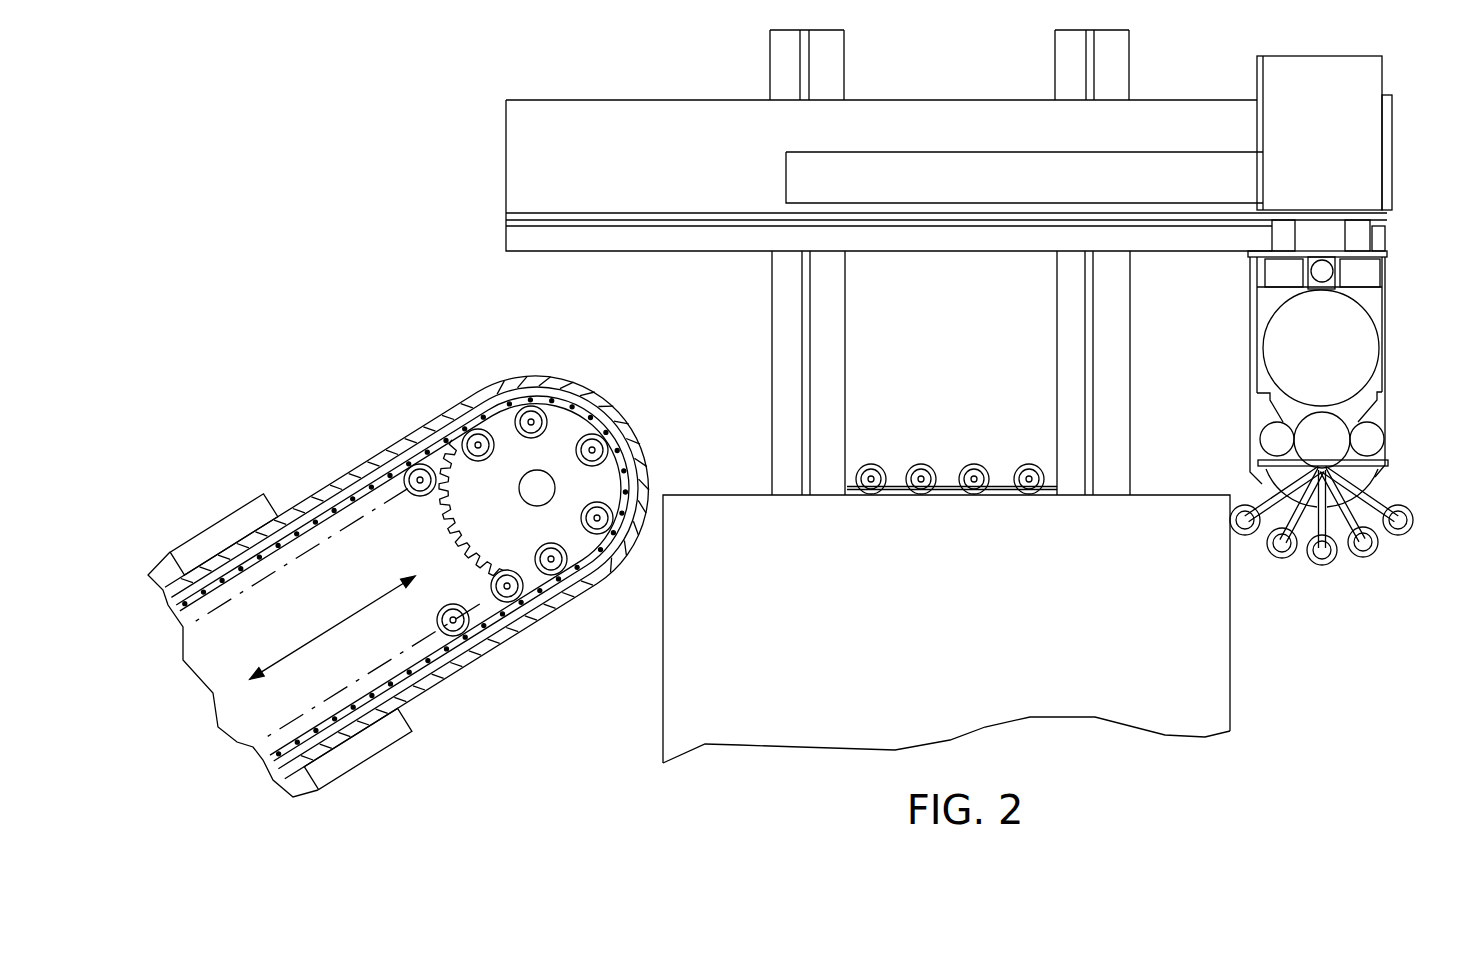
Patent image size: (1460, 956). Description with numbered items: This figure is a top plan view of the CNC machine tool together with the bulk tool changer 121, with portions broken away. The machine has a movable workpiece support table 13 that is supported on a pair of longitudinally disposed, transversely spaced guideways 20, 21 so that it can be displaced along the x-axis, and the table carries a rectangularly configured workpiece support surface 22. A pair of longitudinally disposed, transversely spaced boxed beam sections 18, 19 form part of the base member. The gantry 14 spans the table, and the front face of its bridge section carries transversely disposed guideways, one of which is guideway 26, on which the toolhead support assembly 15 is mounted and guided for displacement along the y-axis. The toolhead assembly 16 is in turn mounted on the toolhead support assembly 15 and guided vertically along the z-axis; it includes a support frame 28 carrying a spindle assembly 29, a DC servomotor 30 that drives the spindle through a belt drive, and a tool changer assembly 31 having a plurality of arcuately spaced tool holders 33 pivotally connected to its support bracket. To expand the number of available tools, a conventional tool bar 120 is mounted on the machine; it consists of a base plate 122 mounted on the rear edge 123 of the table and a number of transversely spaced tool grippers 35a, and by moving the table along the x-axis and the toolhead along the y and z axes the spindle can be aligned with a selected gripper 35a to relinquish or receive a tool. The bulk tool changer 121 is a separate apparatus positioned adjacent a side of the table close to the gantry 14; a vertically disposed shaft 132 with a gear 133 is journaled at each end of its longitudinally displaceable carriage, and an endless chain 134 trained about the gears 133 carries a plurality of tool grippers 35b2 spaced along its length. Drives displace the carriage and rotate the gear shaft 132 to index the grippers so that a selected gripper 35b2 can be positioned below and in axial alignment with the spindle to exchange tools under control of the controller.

The workpiece support table 13 is at (1231, 656).
The gantry 14 is at (505, 180).
The toolhead support assembly 15 is at (1388, 229).
The toolhead assembly 16 is at (1384, 308).
The boxed beam section 18 is at (773, 447).
The boxed beam section 19 is at (1130, 419).
The guideway 20 is at (803, 373).
The guideway 21 is at (1103, 362).
The workpiece support surface 22 is at (820, 720).
The guideway 26 is at (643, 220).
The support frame 28 is at (1386, 393).
The spindle assembly 29 is at (1330, 442).
The DC servomotor 30 is at (1350, 362).
The tool changer assembly 31 is at (1311, 588).
The tool holder 33 is at (1266, 550).
The tool gripper 35a is at (1029, 463).
The tool gripper 35b2 is at (482, 628).
The tool bar 120 is at (947, 498).
The bulk tool changer 121 is at (434, 410).
The base plate 122 is at (895, 488).
The rear edge 123 is at (683, 494).
The shaft 132 is at (525, 490).
The gear 133 is at (467, 530).
The endless chain 134 is at (243, 560).